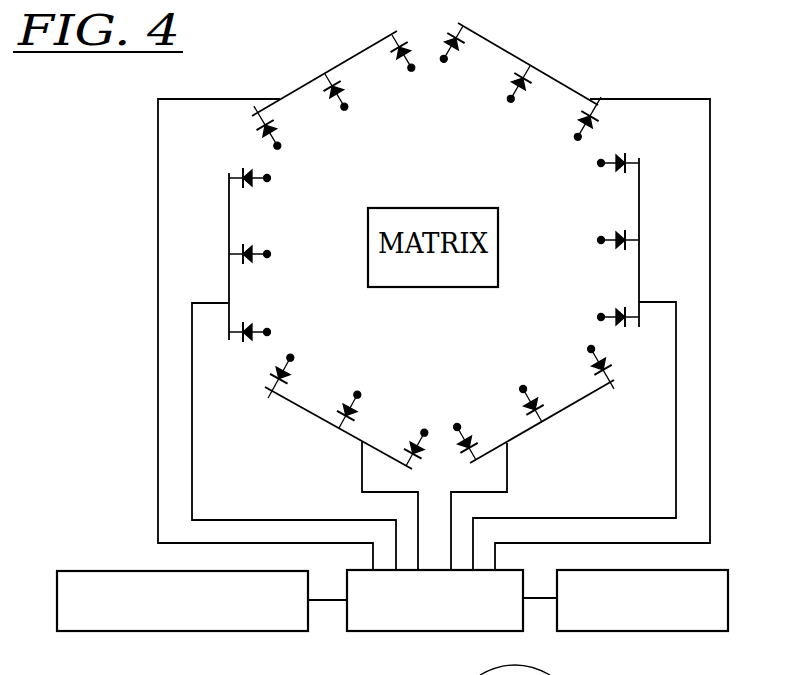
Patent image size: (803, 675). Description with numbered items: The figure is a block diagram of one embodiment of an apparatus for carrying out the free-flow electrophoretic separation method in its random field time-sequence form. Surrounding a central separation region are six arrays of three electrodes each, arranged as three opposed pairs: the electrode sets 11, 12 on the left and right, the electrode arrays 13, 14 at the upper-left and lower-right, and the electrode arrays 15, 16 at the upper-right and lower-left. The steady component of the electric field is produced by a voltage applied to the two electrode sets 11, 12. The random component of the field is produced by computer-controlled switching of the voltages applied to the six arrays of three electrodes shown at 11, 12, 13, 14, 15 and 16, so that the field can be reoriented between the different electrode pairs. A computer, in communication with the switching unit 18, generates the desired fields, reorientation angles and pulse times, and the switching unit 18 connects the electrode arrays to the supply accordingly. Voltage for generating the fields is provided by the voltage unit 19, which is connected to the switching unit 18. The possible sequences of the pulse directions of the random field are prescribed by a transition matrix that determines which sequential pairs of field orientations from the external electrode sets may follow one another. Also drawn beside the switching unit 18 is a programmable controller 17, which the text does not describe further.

The electrode set 11 is at (229, 245).
The electrode set 12 is at (639, 218).
The electrode array 13 is at (350, 58).
The electrode array 14 is at (570, 405).
The electrode array 15 is at (498, 46).
The electrode array 16 is at (298, 407).
The programmable controller 17 is at (147, 633).
The switching unit 18 is at (393, 632).
The voltage unit 19 is at (613, 632).